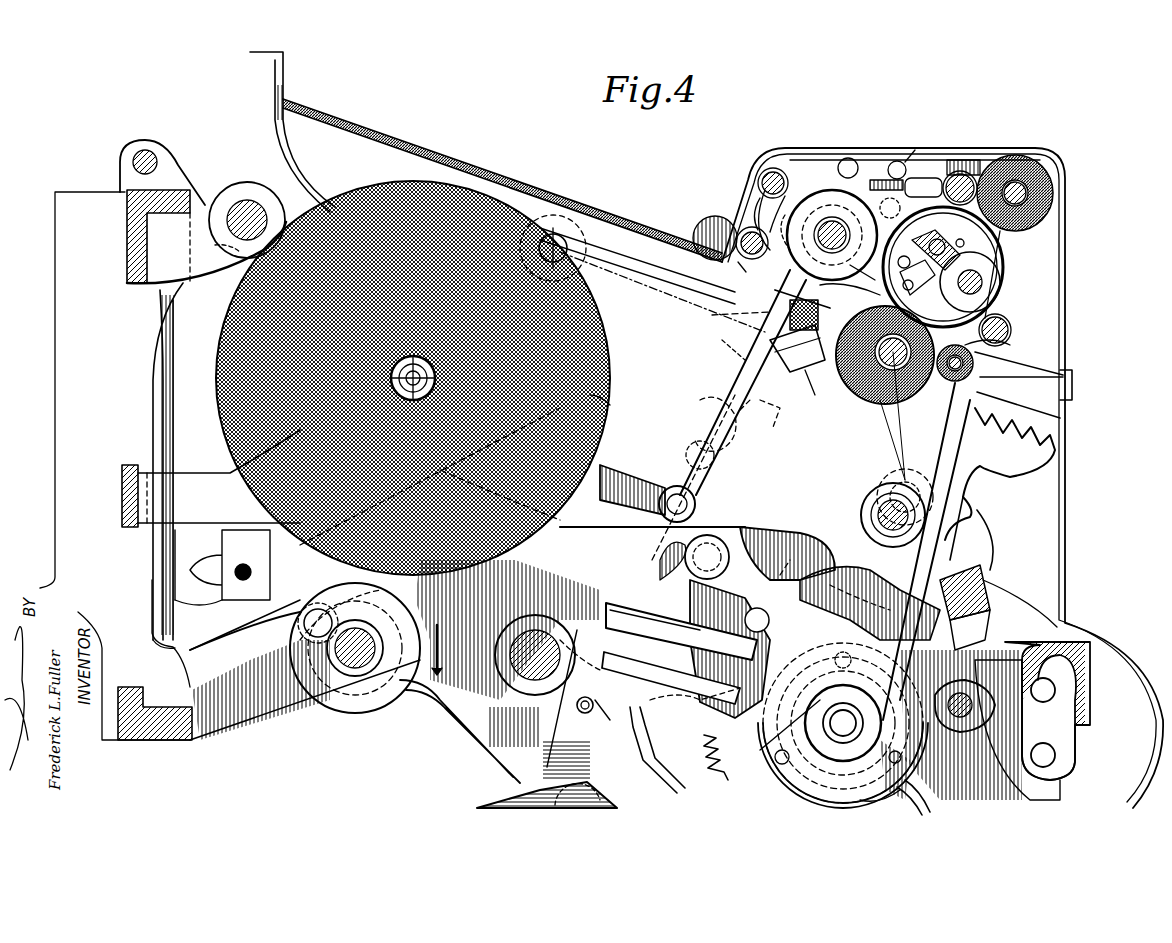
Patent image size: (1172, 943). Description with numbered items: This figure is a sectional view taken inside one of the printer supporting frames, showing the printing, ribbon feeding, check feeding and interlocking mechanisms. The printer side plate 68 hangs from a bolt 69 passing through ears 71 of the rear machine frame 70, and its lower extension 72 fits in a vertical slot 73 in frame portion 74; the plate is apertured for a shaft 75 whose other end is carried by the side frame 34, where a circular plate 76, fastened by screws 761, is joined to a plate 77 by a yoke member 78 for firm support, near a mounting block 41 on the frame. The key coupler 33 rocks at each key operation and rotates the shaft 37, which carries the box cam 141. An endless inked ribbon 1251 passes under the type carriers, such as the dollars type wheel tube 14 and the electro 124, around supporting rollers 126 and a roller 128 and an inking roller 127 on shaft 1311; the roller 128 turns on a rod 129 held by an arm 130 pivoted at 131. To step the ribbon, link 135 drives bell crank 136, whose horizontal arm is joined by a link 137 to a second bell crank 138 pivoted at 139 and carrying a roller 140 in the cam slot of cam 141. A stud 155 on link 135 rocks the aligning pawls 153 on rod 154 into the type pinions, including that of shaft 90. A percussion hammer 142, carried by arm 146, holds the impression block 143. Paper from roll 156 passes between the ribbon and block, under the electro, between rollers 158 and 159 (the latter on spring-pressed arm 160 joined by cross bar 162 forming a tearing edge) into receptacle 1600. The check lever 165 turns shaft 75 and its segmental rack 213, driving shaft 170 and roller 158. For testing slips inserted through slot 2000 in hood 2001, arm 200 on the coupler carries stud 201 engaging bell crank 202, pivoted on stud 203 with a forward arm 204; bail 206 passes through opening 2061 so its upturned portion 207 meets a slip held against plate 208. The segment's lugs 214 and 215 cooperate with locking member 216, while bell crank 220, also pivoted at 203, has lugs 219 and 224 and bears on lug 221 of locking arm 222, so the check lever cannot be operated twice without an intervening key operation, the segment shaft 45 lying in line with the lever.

The tube 14 is at (832, 228).
The key coupler 33 is at (547, 795).
The side frame 34 is at (915, 780).
The transverse shaft 37 is at (358, 670).
The mounting block 41 is at (1010, 710).
The segment shaft 45 is at (510, 648).
The vertical side plate 68 is at (871, 515).
The bolt 69 is at (247, 208).
The rear supporting machine frame 70 is at (115, 385).
The ear 71 is at (206, 236).
The extension 72 is at (148, 496).
The vertical slot 73 is at (148, 470).
The frame portion 74 is at (122, 492).
The shaft 75 is at (789, 746).
The circular plate 76 is at (800, 788).
The plate 77 is at (843, 723).
The yoke member 78 is at (880, 780).
The transverse shaft 90 is at (863, 279).
The electro 124 is at (1005, 265).
The supporting roller 126 is at (752, 262).
The inking roller 127 is at (1053, 198).
The roller 128 is at (775, 168).
The rod 129 is at (758, 185).
The arm 130 is at (762, 217).
The pivot 131 is at (705, 228).
The link 135 is at (920, 165).
The bell crank 136 is at (850, 178).
The link 137 is at (742, 387).
The bell crank 138 is at (610, 465).
The pivot 139 is at (612, 404).
The roller 140 is at (316, 610).
The box cam 141 is at (385, 718).
The percussion hammer 142 is at (748, 338).
The impression block 143 is at (818, 312).
The arm 146 is at (642, 273).
The aligning pawl 153 is at (895, 165).
The rod 154 is at (923, 187).
The stud 155 is at (900, 160).
The paper roll 156 is at (590, 352).
The roller 158 is at (855, 400).
The roller 159 is at (1010, 347).
The spring-pressed arm 160 is at (923, 551).
The cross bar 162 is at (975, 368).
The check issuing lever 165 is at (705, 215).
The shaft 170 is at (897, 416).
The arm 200 is at (578, 650).
The stud 201 is at (577, 703).
The bell crank 202 is at (660, 628).
The stud 203 is at (685, 551).
The forwardly extending arm 204 is at (770, 550).
The bail shaped member 206 is at (797, 348).
The upturned portion 207 is at (790, 302).
The horizontal plate 208 is at (853, 296).
The segmental rack 213 is at (1000, 474).
The locking lug 214 is at (985, 560).
The locking lug 215 is at (976, 630).
The locking member 216 is at (978, 505).
The lug 219 is at (783, 410).
The bell crank 220 is at (750, 472).
The lug 221 is at (743, 649).
The locking arm 222 is at (671, 722).
The lug 224 is at (722, 433).
The screw 761 is at (775, 758).
The inked ribbon 1251 is at (1005, 280).
The shaft 1311 is at (1045, 165).
The receptacle 1600 is at (1019, 385).
The slot 2000 is at (1070, 372).
The hood 2001 is at (1067, 270).
The opening 2061 is at (822, 391).